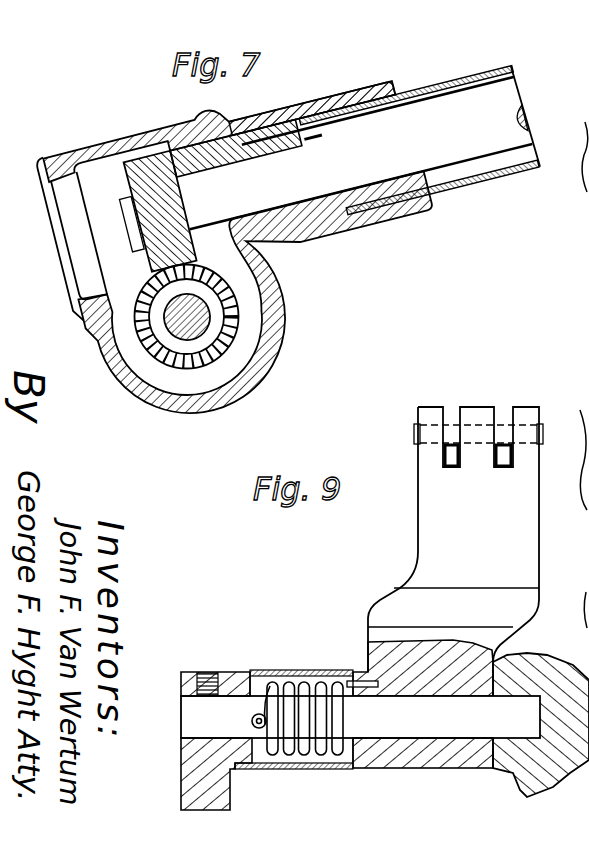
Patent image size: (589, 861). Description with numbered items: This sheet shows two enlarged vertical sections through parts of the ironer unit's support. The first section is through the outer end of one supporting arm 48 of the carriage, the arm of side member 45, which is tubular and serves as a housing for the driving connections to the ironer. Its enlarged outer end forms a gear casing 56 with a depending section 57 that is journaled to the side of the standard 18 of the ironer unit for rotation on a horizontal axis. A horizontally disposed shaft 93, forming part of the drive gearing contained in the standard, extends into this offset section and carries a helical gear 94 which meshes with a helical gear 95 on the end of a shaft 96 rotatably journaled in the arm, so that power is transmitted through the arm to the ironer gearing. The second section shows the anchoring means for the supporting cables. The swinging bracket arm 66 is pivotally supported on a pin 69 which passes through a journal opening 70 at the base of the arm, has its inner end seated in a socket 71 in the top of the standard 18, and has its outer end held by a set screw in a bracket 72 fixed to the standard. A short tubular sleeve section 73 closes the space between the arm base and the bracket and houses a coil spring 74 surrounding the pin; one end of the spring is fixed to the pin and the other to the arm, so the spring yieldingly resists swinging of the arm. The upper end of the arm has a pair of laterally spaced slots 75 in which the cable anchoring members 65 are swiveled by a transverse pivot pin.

In FIG. 9, the standard 18 is at (549, 771).
In FIG. 7, the side member 45 is at (584, 183).
In FIG. 7, the arm 48 is at (503, 176).
In FIG. 7, the gear casing 56 is at (223, 124).
In FIG. 7, the depending section 57 is at (287, 330).
In FIG. 9, the cable anchoring members 65 is at (500, 414).
In FIG. 9, the swinging bracket arm 66 is at (531, 538).
In FIG. 9, the pin 69 is at (468, 728).
In FIG. 9, the journal opening 70 is at (403, 741).
In FIG. 9, the socket 71 is at (525, 688).
In FIG. 9, the bracket 72 is at (183, 671).
In FIG. 9, the tubular sleeve section 73 is at (268, 670).
In FIG. 9, the coil spring 74 is at (310, 680).
In FIG. 9, the slots 75 is at (450, 412).
In FIG. 7, the shaft 93 is at (203, 327).
In FIG. 7, the helical gear 94 is at (187, 363).
In FIG. 7, the helical gear 95 is at (145, 160).
In FIG. 7, the shaft 96 is at (512, 122).